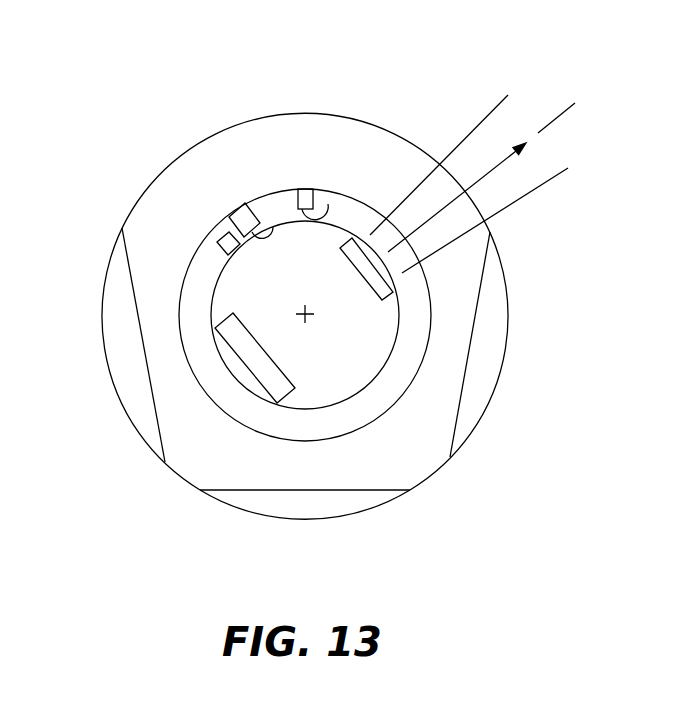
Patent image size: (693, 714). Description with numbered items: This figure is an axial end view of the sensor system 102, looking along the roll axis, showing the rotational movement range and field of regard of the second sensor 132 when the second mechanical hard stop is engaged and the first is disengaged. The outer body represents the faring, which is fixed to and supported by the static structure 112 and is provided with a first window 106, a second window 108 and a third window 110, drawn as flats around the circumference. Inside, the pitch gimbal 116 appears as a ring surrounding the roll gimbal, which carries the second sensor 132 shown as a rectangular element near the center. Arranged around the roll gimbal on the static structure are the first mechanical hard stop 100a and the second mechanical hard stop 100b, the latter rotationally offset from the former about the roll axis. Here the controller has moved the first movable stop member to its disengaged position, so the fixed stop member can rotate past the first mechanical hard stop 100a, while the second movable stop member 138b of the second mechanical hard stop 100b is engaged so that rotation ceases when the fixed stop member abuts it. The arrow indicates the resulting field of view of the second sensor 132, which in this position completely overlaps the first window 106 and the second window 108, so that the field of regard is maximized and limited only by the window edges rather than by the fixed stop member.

The sensor system 102 is at (167, 518).
The first window 106 is at (473, 337).
The second window 108 is at (150, 373).
The third window 110 is at (284, 491).
The static structure 112 is at (373, 512).
The pitch gimbal 116 is at (403, 397).
The second sensor 132 is at (362, 273).
The first mechanical hard stop 100a is at (302, 188).
The second mechanical hard stop 100b is at (230, 217).
The second movable stop member 138b is at (272, 233).